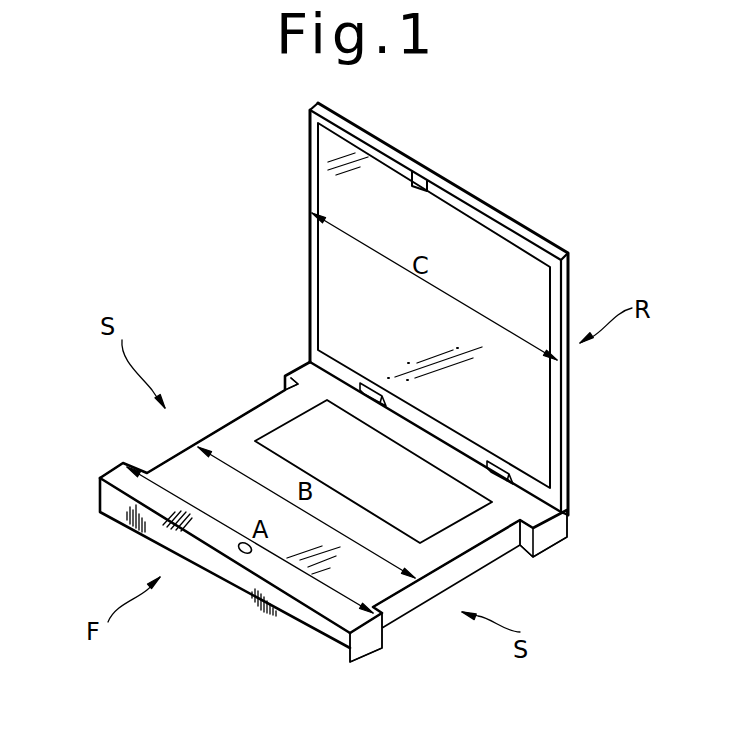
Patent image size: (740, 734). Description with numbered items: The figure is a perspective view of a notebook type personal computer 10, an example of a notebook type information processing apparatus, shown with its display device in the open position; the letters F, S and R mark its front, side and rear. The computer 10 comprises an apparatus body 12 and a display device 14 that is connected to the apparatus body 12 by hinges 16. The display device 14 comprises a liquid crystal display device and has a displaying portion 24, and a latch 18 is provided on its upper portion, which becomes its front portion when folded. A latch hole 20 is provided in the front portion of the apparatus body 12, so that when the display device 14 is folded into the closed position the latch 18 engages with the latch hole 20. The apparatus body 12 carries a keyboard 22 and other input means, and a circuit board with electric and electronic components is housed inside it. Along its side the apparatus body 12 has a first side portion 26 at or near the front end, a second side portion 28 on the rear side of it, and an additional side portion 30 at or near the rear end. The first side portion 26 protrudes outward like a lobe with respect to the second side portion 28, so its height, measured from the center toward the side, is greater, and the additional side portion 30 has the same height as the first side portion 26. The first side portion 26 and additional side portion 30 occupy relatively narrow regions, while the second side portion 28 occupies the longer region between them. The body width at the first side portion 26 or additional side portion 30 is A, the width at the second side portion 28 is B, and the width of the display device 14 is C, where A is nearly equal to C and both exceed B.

The notebook type personal computer 10 is at (583, 390).
The apparatus body 12 is at (306, 592).
The display device 14 is at (570, 273).
The hinges 16 is at (368, 384).
The latch 18 is at (420, 184).
The latch hole 20 is at (245, 552).
The keyboard 22 is at (462, 505).
The displaying portion 24 is at (527, 265).
The first side portion 26 is at (115, 471).
The second side portion 28 is at (240, 418).
The additional side portion 30 is at (289, 379).